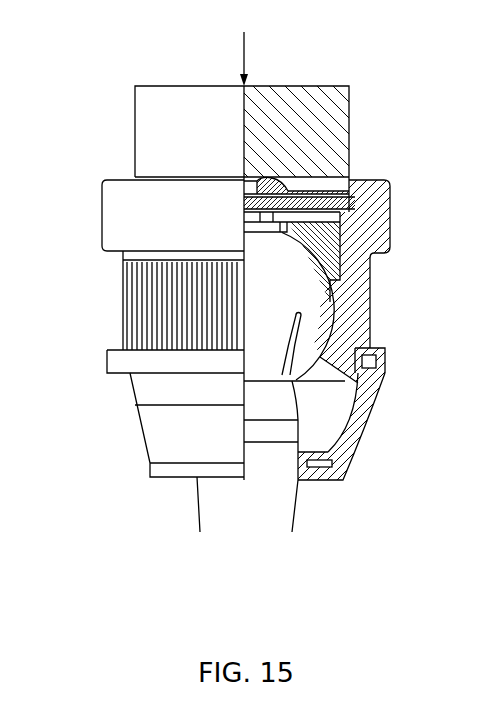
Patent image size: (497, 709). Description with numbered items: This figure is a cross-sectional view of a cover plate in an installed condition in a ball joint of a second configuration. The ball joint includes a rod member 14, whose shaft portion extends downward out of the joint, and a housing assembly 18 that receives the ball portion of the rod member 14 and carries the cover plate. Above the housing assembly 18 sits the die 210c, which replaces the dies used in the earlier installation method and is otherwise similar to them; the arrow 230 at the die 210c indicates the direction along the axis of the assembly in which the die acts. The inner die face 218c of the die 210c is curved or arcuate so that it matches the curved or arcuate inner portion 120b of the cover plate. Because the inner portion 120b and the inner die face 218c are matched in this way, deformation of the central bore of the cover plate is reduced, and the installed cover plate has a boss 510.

The rod member 14 is at (212, 503).
The housing assembly 18 is at (122, 387).
The inner portion 120b is at (277, 192).
The die 210c is at (135, 122).
The inner die face 218c is at (280, 187).
The axial direction arrow 230 is at (243, 55).
The boss 510 is at (272, 180).